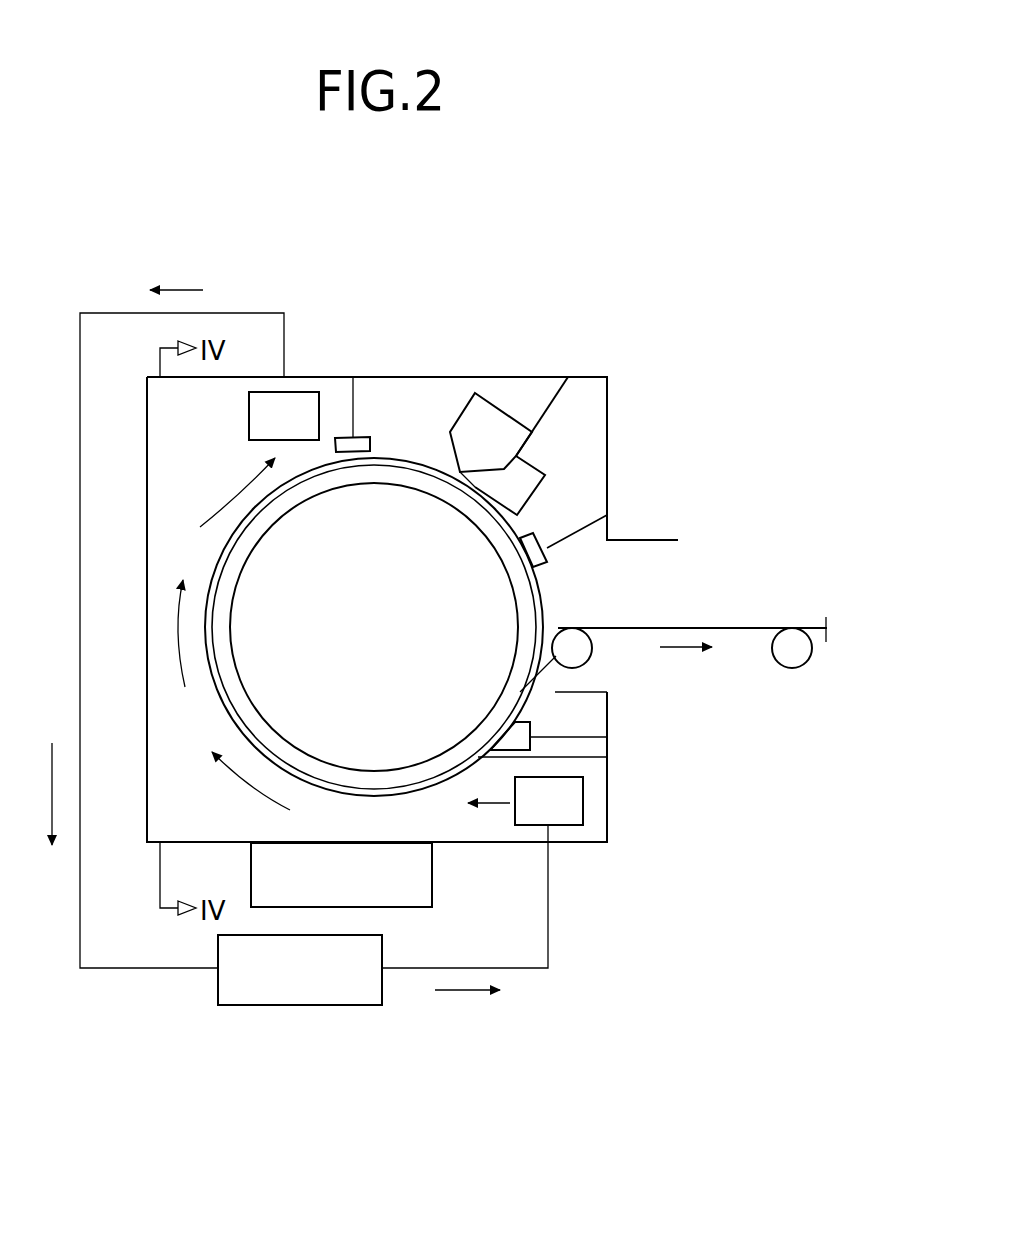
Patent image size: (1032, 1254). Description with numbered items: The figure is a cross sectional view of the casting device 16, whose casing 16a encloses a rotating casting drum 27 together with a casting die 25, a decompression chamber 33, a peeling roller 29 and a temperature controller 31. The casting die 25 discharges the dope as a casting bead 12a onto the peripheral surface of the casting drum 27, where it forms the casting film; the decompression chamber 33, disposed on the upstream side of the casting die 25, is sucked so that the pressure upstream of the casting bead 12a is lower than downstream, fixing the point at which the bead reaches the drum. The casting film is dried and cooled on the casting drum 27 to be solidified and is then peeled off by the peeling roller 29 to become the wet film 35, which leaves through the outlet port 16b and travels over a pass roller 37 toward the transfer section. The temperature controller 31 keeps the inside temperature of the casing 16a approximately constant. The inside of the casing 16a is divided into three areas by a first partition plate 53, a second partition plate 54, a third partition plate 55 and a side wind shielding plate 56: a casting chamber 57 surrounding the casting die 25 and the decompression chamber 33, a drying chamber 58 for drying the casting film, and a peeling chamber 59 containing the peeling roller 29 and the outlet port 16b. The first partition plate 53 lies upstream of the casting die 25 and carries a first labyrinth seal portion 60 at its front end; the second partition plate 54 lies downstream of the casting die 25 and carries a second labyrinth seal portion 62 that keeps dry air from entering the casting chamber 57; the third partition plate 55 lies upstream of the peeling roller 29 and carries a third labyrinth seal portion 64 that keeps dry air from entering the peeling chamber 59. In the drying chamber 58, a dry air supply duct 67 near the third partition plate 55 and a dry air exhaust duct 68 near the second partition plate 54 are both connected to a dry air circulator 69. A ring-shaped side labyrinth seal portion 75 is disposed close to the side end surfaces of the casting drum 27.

The casting bead 12a is at (453, 477).
The casting device 16 is at (630, 1022).
The casing 16a is at (578, 842).
The outlet port 16b is at (678, 541).
The casting die 25 is at (498, 403).
The casting drum 27 is at (398, 715).
The peeling roller 29 is at (573, 643).
The temperature controller 31 is at (251, 862).
The decompression chamber 33 is at (530, 458).
The wet film 35 is at (825, 620).
The pass roller 37 is at (802, 660).
The first partition plate 53 is at (597, 512).
The second partition plate 54 is at (356, 377).
The third partition plate 55 is at (592, 732).
The side wind shielding plate 56 is at (215, 700).
The casting chamber 57 is at (588, 405).
The drying chamber 58 is at (165, 504).
The peeling chamber 59 is at (583, 572).
The first labyrinth seal portion 60 is at (542, 570).
The second labyrinth seal portion 62 is at (343, 437).
The third labyrinth seal portion 64 is at (532, 742).
The dry air supply duct 67 is at (583, 812).
The dry air exhaust duct 68 is at (249, 419).
The dry air circulator 69 is at (300, 1005).
The side labyrinth seal portion 75 is at (222, 598).